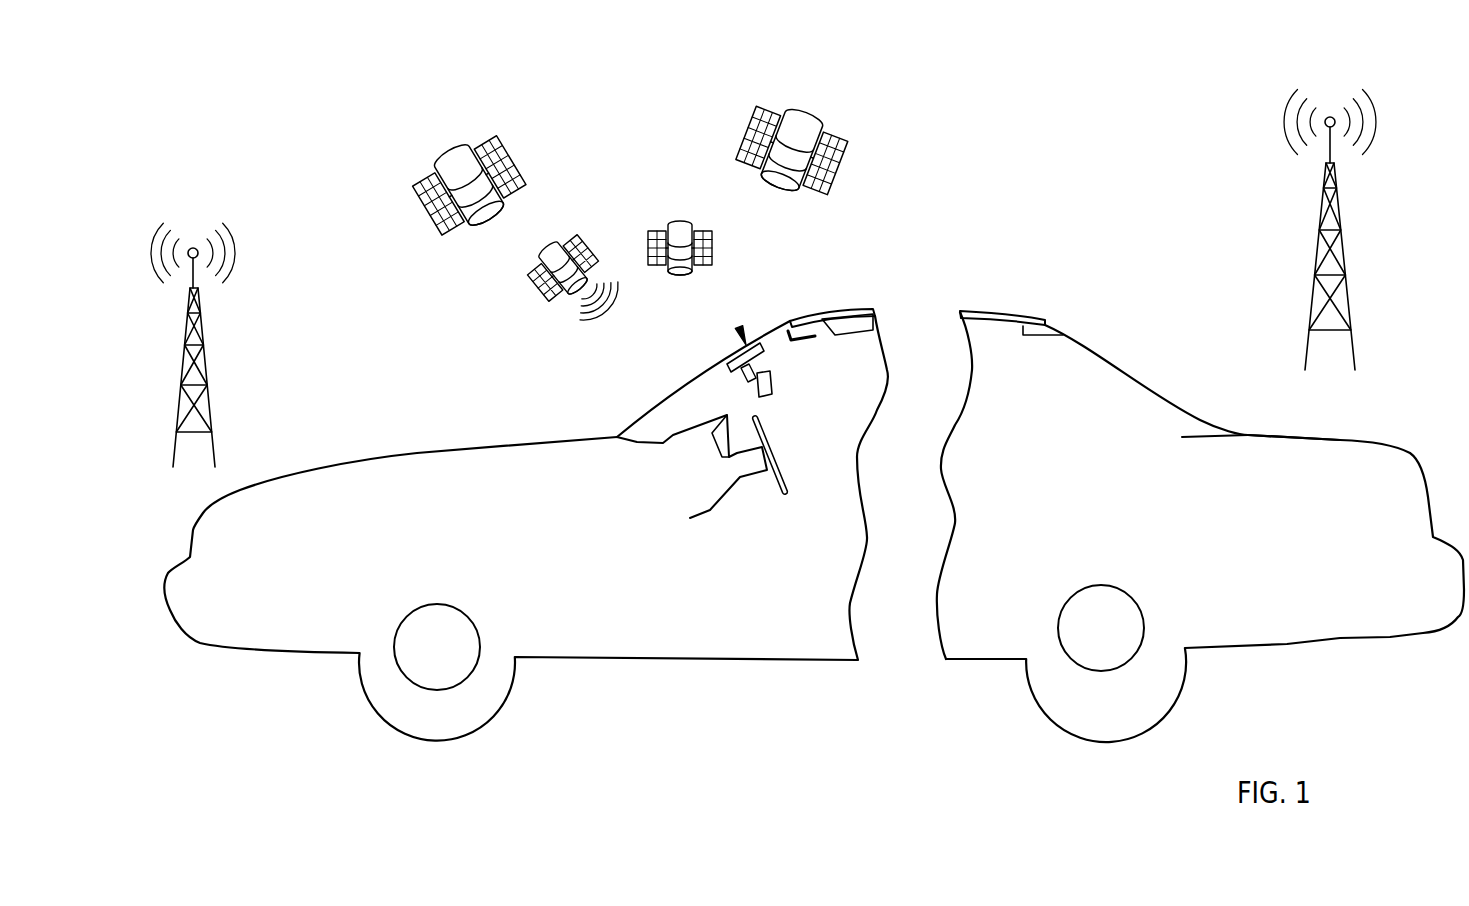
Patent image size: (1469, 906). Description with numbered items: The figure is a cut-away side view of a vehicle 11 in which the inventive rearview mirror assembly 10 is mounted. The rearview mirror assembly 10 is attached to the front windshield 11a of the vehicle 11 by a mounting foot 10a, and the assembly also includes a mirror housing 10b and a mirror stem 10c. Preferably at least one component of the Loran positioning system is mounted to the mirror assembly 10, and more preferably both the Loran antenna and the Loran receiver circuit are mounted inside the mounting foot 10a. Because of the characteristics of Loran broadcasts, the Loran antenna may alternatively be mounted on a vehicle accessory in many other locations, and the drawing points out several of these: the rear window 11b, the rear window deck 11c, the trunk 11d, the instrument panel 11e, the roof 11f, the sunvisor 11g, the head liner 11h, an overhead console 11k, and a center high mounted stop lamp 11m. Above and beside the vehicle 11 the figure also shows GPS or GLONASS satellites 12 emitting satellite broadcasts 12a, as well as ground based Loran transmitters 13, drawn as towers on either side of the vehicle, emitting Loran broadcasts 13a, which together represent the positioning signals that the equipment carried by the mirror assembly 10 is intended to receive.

The rearview mirror assembly 10 is at (769, 355).
The mounting foot 10a is at (740, 328).
The mirror housing 10b is at (772, 395).
The mirror stem 10c is at (733, 378).
The vehicle 11 is at (1003, 215).
The front windshield 11a is at (667, 400).
The rear window 11b is at (1094, 326).
The rear window deck 11c is at (1177, 420).
The trunk 11d is at (1295, 463).
The instrument panel 11e is at (665, 468).
The roof 11f is at (840, 307).
The sunvisor 11g is at (797, 331).
The head liner 11h is at (998, 325).
The overhead console 11k is at (868, 333).
The center high mounted stop lamp (CHMSL) 11m is at (1046, 337).
The GPS or GLONASS satellites 12 is at (629, 229).
The satellite broadcasts 12a is at (583, 322).
The ground based Loran transmitters 13 is at (203, 328).
The Loran broadcasts 13a is at (163, 223).